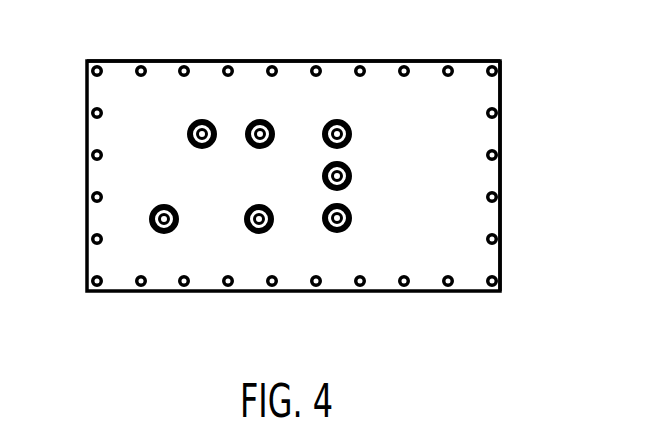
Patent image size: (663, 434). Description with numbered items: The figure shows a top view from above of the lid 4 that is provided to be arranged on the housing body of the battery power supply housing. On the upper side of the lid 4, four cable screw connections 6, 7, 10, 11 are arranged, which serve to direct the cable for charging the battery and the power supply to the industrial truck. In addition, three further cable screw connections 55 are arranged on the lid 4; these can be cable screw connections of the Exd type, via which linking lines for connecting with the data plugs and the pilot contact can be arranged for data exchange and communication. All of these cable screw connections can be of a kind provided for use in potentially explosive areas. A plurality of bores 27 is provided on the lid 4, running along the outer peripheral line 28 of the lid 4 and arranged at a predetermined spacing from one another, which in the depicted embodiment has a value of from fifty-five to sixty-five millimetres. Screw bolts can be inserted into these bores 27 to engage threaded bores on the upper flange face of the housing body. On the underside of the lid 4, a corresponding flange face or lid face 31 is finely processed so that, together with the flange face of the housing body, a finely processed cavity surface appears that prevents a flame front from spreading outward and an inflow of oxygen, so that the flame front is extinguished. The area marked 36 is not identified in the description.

The lid 4 is at (506, 82).
The cable screw connection 6 is at (202, 119).
The cable screw connection 7 is at (164, 234).
The cable screw connection 10 is at (260, 119).
The cable screw connection 11 is at (259, 234).
The bores 27 is at (478, 138).
The outer peripheral line 28 is at (460, 84).
The lid face 31 is at (501, 219).
The interior region 36 is at (447, 191).
The further cable screw connections 55 is at (337, 119).